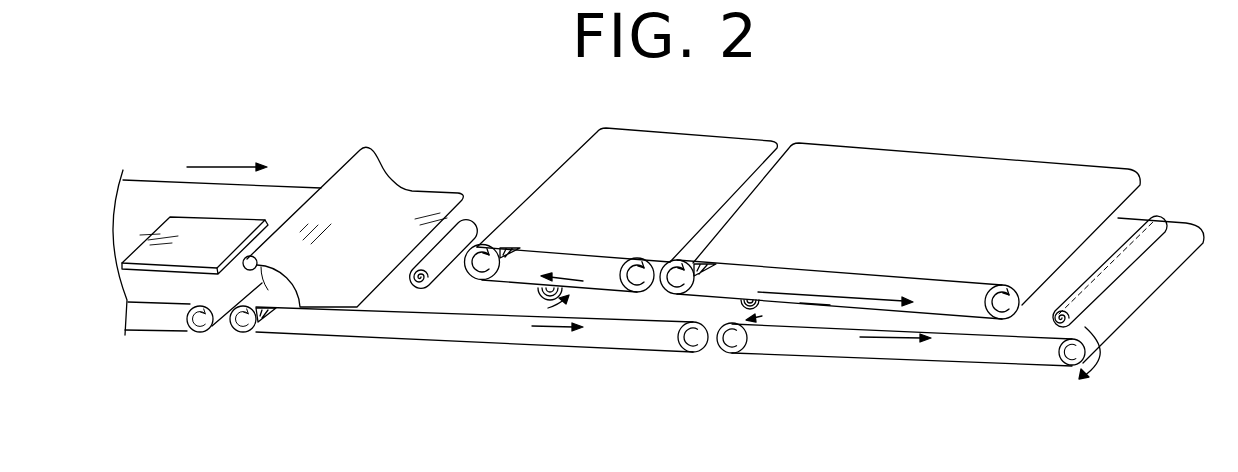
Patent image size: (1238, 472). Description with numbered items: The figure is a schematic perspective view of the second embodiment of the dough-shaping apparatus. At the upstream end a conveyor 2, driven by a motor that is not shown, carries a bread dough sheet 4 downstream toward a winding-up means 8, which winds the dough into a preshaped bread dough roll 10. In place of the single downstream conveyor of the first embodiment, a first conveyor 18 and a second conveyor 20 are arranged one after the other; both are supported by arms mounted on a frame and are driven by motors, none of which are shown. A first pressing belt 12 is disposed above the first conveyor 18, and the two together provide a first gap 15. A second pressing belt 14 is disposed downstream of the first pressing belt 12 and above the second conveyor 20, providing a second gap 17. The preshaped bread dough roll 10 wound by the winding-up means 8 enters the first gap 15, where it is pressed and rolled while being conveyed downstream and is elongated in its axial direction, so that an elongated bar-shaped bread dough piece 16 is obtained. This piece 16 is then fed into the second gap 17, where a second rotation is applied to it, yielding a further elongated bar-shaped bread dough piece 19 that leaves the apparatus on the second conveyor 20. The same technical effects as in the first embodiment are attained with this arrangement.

The conveyor 2 is at (297, 183).
The bread dough sheet 4 is at (183, 223).
The winding-up means 8 is at (389, 171).
The preshaped bread dough roll 10 is at (470, 224).
The first pressing belt 12 is at (563, 170).
The second pressing belt 14 is at (1020, 167).
The first gap 15 is at (483, 304).
The elongated bar-shaped bread dough piece 16 is at (766, 312).
The second gap 17 is at (811, 313).
The first conveyor 18 is at (310, 338).
The further elongated bar-shaped bread dough piece 19 is at (1117, 270).
The second conveyor 20 is at (960, 363).